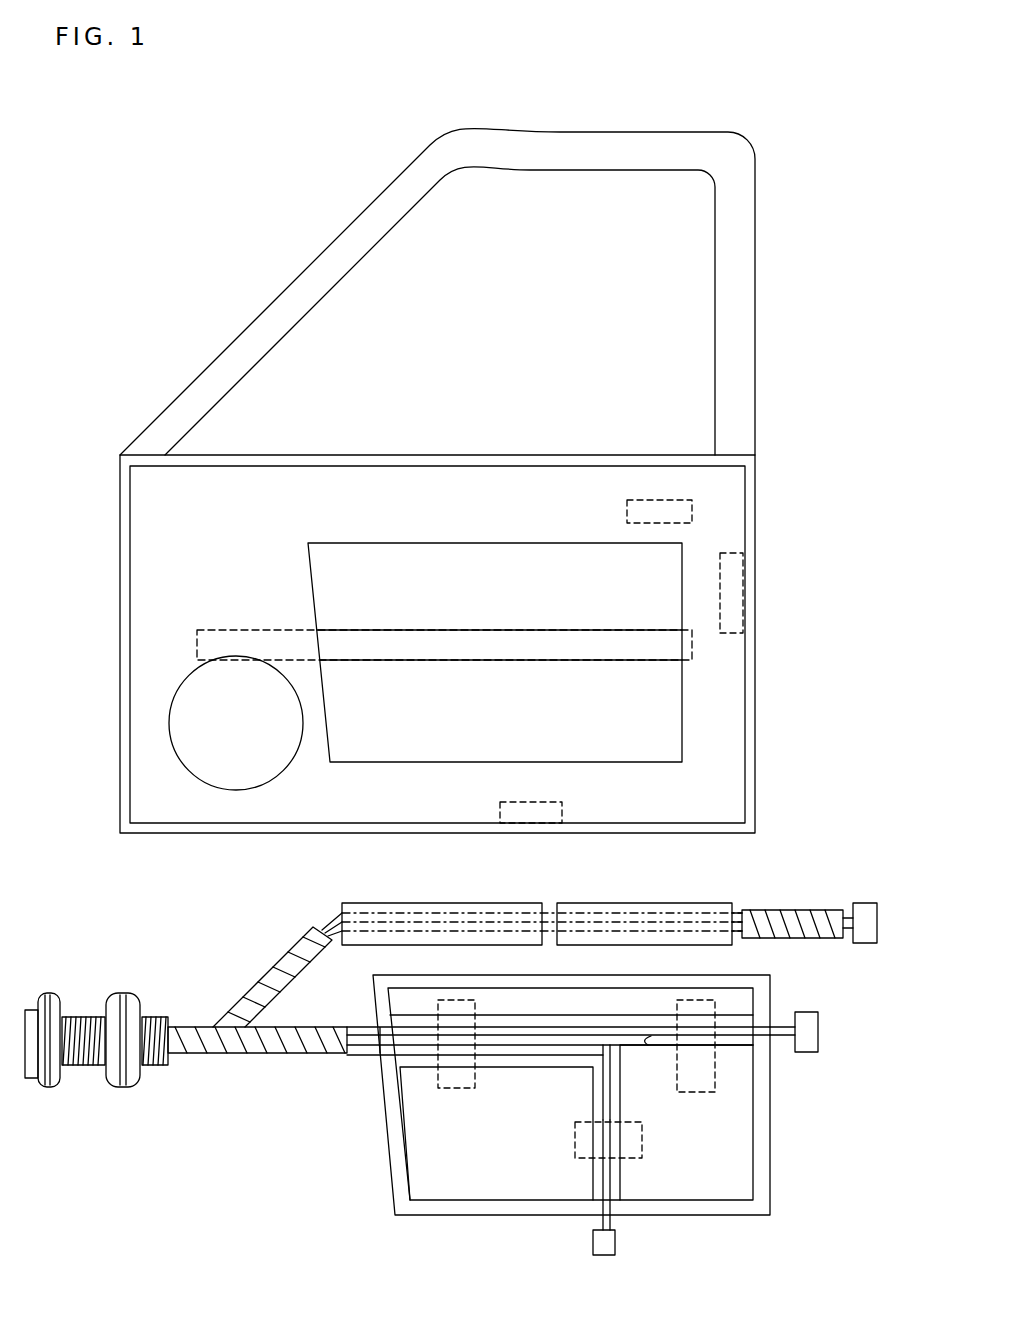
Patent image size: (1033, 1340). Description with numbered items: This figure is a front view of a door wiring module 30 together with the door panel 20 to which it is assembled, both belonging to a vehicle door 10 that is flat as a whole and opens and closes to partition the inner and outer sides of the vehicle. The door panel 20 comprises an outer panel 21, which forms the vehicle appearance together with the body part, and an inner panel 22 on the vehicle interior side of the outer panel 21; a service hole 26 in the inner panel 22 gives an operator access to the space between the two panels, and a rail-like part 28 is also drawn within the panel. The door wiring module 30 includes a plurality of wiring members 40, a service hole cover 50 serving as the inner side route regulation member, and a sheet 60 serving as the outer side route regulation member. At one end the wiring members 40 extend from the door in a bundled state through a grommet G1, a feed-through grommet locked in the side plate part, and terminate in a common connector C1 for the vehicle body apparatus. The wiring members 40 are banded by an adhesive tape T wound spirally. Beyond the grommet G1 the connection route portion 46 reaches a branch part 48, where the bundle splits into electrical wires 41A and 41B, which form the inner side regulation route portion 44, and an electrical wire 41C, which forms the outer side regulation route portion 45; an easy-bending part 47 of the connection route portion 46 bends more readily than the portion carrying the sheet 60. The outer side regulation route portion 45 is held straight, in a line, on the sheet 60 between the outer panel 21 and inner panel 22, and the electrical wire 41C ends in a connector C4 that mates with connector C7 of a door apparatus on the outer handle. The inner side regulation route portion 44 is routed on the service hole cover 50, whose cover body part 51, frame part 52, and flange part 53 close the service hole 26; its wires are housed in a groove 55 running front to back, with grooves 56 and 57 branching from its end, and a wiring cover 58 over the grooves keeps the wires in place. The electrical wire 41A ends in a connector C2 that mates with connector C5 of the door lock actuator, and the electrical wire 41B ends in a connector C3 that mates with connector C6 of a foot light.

The door 10 is at (229, 166).
The door panel 20 is at (229, 297).
The outer panel 21 is at (755, 663).
The inner panel 22 is at (722, 690).
The service hole 26 is at (684, 733).
The window regulator rail 28 is at (512, 662).
The connector C5 is at (743, 553).
The connector C6 is at (562, 812).
The connector C7 is at (659, 500).
The door wiring module 30 is at (171, 930).
The common connector C1 is at (32, 1080).
The grommet G1 is at (140, 1085).
The connection route portion 46 is at (241, 1070).
The adhesive tape T is at (278, 1042).
The easy-bending part 47 is at (266, 982).
The branch part 48 is at (208, 1015).
The electrical wire 41C is at (332, 912).
The outer side regulation route portion 45 is at (490, 899).
The outer side route regulation member 60 is at (417, 903).
The inner side regulation route portion 44 is at (560, 1002).
The connector C4 is at (865, 903).
The wiring member 40 is at (349, 1070).
The electrical wire 41A is at (775, 1010).
The connector C2 is at (806, 1052).
The service hole cover 50 is at (826, 1113).
The cover body part 51 is at (738, 1125).
The frame part 52 is at (752, 1150).
The flange part 53 is at (762, 1183).
The groove 55 is at (500, 1062).
The groove 56 is at (648, 1045).
The groove 57 is at (598, 1105).
The electrical wire 41B is at (611, 1170).
The wiring cover 58 is at (455, 1088).
The connector C3 is at (615, 1243).